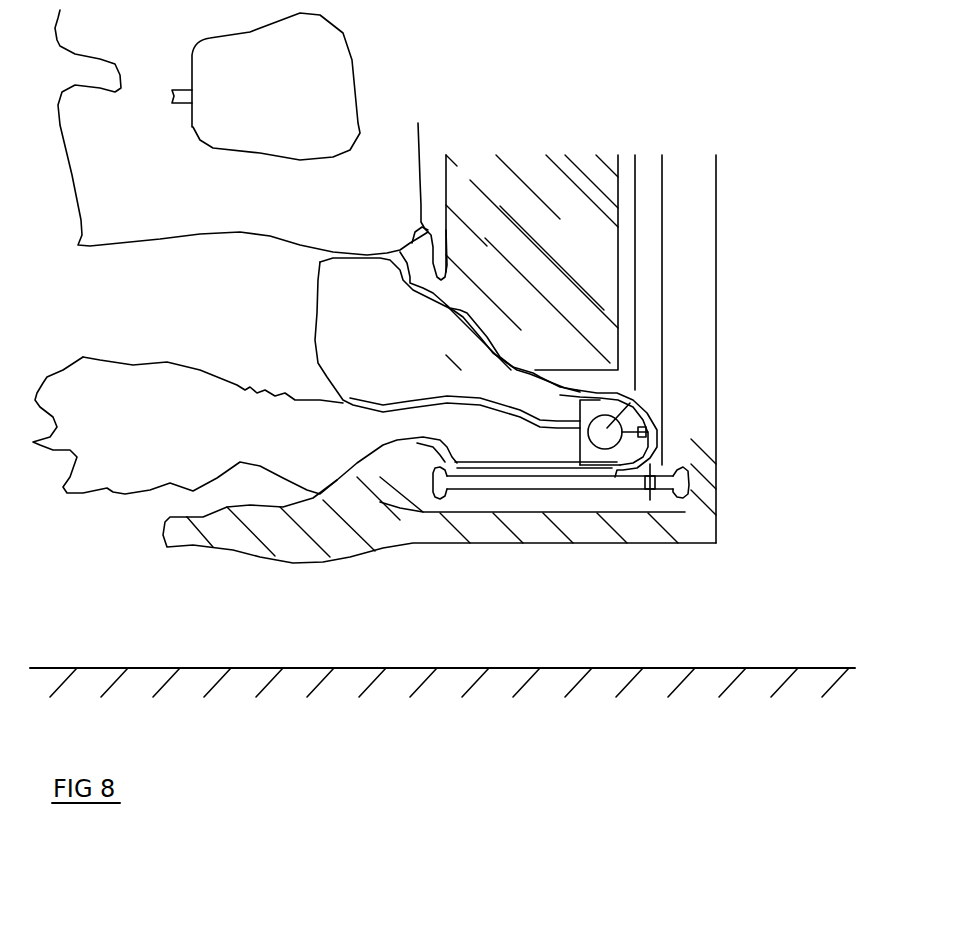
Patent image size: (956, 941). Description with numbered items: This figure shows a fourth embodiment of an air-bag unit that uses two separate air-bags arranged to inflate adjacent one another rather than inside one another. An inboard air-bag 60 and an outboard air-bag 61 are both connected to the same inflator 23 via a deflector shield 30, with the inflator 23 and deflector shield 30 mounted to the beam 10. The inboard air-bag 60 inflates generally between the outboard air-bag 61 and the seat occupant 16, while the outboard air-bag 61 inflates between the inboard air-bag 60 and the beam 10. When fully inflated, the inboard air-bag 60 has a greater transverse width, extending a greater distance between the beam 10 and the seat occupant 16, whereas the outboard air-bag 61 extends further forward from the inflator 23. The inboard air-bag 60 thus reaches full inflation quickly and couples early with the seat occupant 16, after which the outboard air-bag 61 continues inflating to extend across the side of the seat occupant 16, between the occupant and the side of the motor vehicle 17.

The beam 10 is at (561, 542).
The seat occupant 16 is at (251, 145).
The side of a motor vehicle 17 is at (442, 704).
The inflator 23 is at (629, 410).
The deflector shield 30 is at (693, 359).
The inboard air-bag 60 is at (379, 340).
The outboard air-bag 61 is at (186, 387).